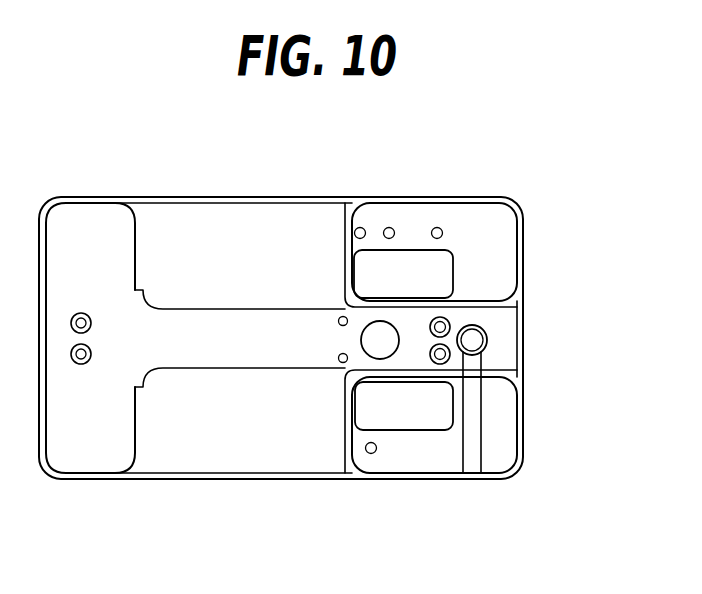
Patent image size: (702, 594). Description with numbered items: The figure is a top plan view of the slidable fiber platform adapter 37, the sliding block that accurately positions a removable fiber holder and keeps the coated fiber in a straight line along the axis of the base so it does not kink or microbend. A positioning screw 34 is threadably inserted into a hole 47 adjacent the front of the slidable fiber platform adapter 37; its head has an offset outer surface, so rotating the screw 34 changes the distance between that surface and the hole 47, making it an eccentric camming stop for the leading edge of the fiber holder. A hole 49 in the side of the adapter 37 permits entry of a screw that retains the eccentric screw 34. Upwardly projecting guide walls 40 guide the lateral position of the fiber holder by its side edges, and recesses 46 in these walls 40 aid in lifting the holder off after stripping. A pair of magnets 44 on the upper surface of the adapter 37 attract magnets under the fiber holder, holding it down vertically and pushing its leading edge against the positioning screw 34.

The slidable fiber platform adapter 37 is at (537, 180).
The positioning screw 34 is at (483, 329).
The upwardly projecting guide walls 40 is at (341, 316).
The recesses 46 is at (388, 264).
The magnets 44 is at (443, 317).
The hole 47 is at (473, 342).
The hole 49 is at (487, 452).